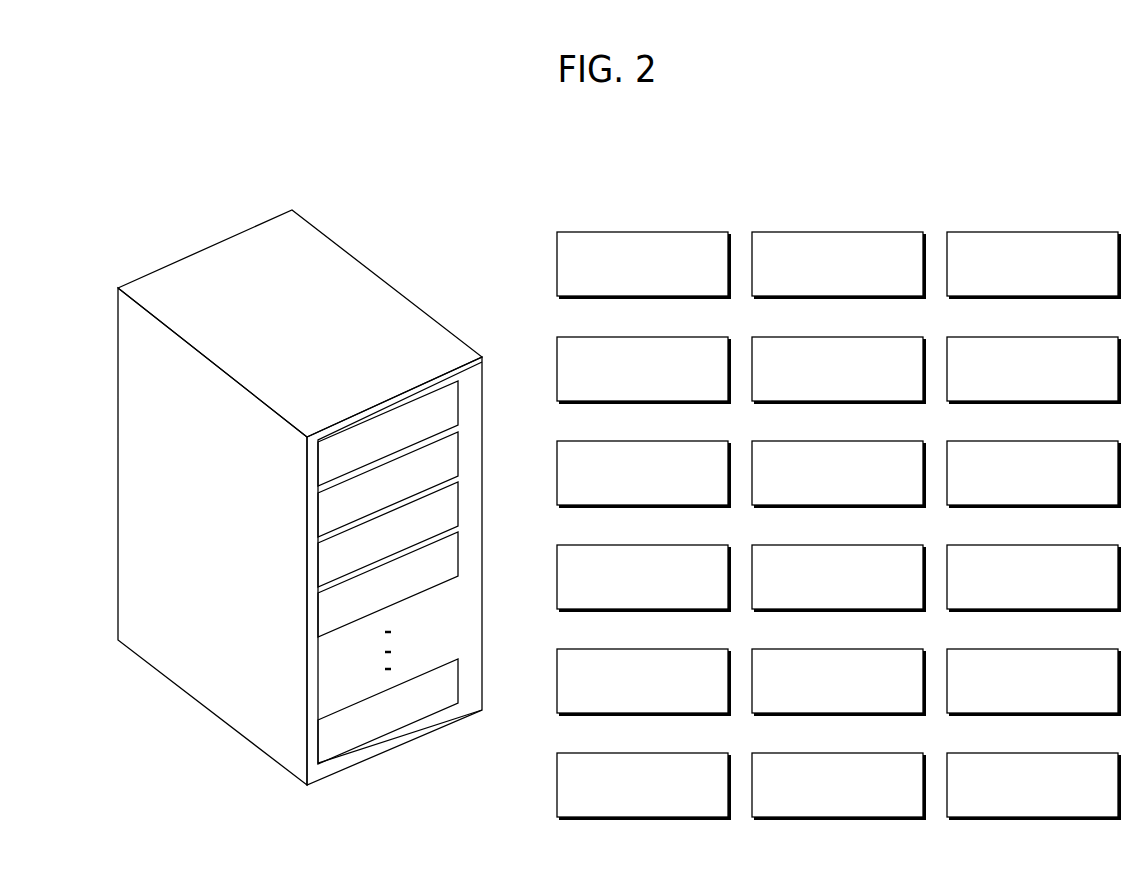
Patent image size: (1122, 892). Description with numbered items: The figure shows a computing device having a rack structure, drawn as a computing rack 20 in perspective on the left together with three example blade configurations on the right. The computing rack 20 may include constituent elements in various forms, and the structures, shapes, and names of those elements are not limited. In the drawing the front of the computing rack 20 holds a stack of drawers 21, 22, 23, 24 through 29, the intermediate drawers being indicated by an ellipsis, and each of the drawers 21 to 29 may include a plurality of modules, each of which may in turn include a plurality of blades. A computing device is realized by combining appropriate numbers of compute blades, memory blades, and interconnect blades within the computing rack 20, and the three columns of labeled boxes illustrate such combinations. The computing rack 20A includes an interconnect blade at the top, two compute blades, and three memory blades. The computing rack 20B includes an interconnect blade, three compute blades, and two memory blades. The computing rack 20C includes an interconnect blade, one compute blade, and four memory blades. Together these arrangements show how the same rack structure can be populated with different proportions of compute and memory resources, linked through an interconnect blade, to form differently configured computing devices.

The computing rack 20 is at (290, 337).
The drawer 21 is at (318, 464).
The drawer 22 is at (318, 517).
The drawer 23 is at (318, 570).
The drawer 24 is at (318, 620).
The drawer 29 is at (318, 743).
The computing rack 20A is at (629, 212).
The computing rack 20B is at (824, 212).
The computing rack 20C is at (1019, 212).